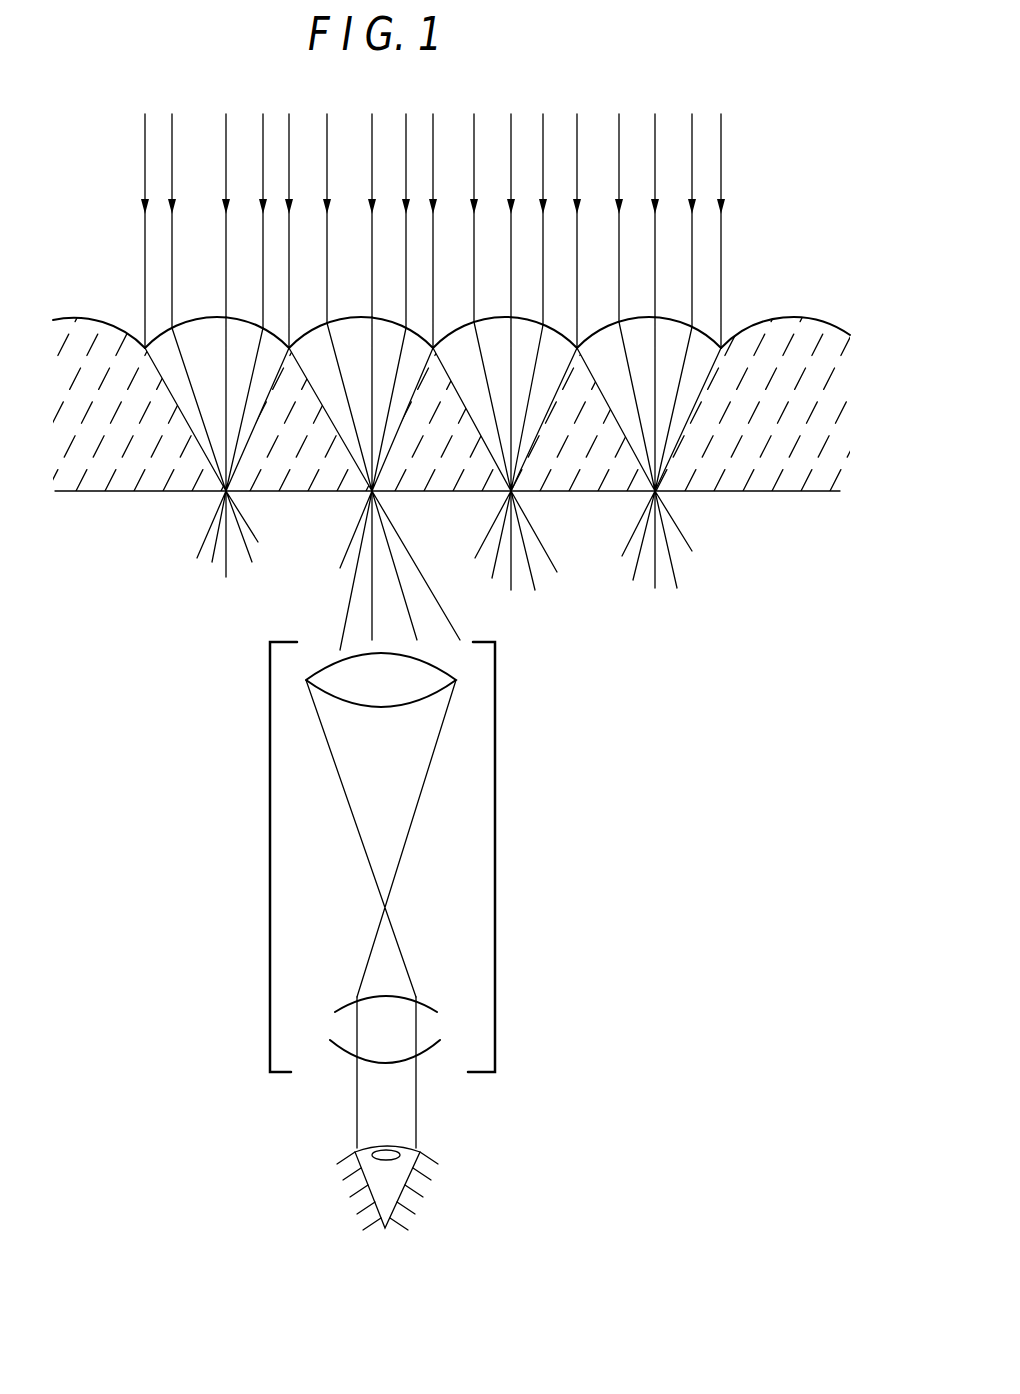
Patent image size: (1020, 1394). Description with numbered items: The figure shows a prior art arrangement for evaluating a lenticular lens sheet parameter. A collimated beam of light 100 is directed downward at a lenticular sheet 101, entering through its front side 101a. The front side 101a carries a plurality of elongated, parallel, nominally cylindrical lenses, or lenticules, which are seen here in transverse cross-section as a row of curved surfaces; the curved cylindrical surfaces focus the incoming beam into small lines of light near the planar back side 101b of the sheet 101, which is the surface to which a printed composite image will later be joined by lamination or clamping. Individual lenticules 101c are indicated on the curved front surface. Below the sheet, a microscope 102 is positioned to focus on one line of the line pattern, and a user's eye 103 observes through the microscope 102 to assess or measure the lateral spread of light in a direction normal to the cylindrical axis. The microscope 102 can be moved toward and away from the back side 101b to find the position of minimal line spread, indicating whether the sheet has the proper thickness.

The collimated beam of light 100 is at (735, 192).
The lenticular sheet 101 is at (776, 350).
The front side 101a is at (808, 322).
The back side 101b is at (793, 493).
The microlens element 101c is at (197, 317).
The microscope 102 is at (495, 882).
The user's eye 103 is at (438, 1190).